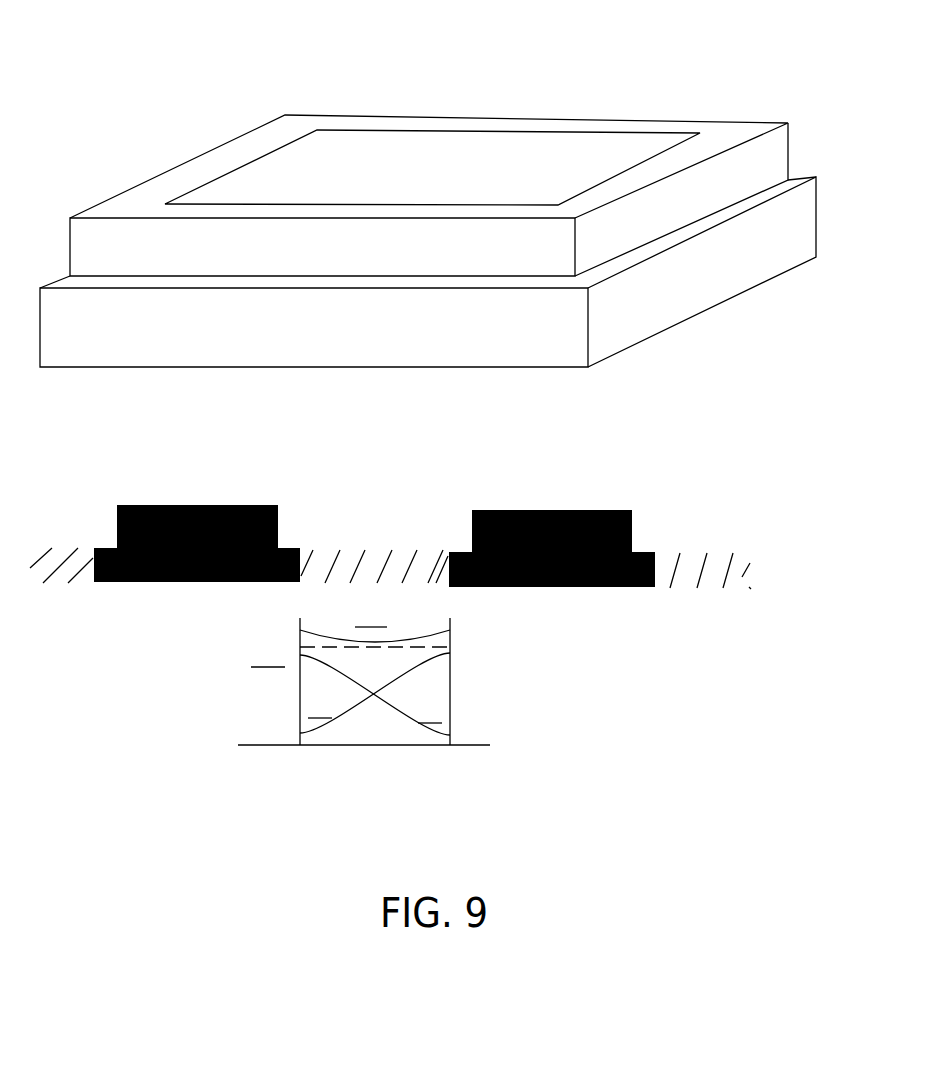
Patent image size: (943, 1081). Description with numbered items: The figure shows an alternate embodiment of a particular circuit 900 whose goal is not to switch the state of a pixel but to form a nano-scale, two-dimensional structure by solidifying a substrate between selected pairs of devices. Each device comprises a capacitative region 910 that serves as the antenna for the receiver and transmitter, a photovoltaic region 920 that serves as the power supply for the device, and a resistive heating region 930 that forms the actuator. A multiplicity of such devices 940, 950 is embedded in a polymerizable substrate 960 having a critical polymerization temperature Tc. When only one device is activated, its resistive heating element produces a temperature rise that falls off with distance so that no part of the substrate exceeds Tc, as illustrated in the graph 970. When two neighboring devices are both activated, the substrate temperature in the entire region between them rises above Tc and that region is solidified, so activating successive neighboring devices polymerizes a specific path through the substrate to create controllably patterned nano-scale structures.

The particular circuit 900 is at (193, 41).
The capacitative region 910 is at (332, 265).
The photovoltaic region 920 is at (561, 180).
The resistive heating region 930 is at (245, 343).
The device 940 is at (222, 498).
The device 950 is at (572, 497).
The polymerizable substrate 960 is at (819, 582).
The graph 970 is at (538, 698).